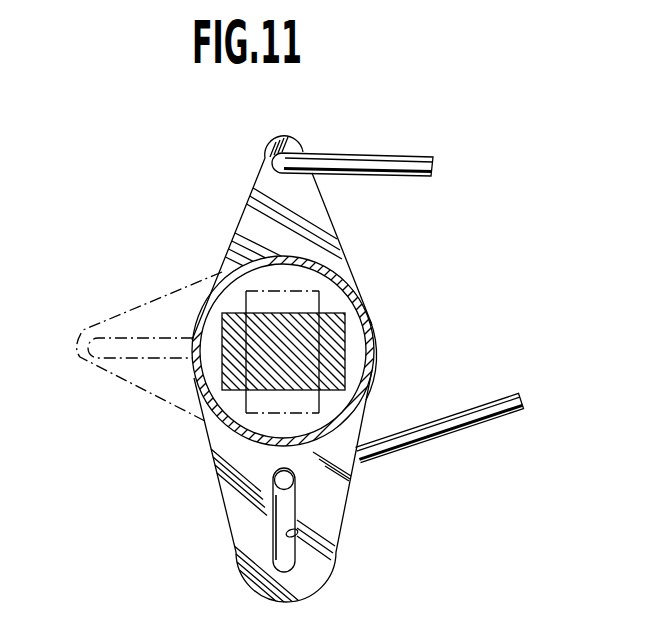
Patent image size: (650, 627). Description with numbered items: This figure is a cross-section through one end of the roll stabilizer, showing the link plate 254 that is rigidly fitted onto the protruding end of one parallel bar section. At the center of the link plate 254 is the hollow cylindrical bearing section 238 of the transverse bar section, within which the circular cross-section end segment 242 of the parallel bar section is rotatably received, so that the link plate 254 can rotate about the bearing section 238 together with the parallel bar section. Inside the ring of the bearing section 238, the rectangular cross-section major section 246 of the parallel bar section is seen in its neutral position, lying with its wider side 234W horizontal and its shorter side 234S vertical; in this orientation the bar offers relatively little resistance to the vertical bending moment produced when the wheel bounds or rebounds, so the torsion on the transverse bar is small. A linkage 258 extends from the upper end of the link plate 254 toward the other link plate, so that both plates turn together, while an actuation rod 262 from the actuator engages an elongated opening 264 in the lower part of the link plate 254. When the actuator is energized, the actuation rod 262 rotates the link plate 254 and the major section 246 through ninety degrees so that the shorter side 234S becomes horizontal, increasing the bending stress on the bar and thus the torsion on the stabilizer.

The shorter side 234S is at (322, 268).
The wider side 234W is at (300, 313).
The bearing section 238 is at (370, 363).
The end segment 242 is at (365, 413).
The major section 246 is at (307, 368).
The link plate 254 is at (318, 212).
The linkage 258 is at (388, 162).
The actuation rod 262 is at (448, 423).
The elongated opening 264 is at (297, 540).